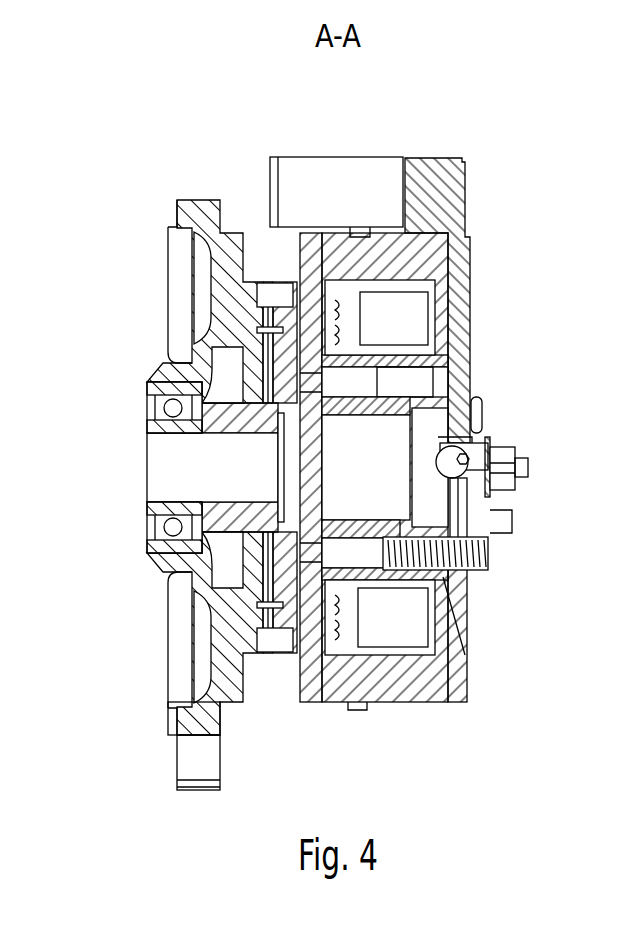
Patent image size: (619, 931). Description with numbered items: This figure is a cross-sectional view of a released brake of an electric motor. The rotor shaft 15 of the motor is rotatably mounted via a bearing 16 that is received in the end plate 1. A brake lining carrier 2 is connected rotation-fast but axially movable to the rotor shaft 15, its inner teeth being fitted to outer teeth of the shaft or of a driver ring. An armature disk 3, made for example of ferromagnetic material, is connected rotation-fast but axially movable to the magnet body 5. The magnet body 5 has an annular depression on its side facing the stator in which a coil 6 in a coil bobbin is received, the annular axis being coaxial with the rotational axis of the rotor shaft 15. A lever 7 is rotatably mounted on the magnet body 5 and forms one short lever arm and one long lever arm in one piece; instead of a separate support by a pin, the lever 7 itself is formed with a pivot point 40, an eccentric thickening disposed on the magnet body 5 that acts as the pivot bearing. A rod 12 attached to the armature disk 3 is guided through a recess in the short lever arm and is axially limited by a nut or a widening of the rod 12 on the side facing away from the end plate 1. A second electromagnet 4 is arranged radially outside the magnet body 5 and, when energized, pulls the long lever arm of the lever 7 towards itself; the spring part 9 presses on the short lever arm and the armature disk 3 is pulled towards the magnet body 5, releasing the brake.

The end plate 1 is at (203, 713).
The brake lining carrier 2 is at (265, 303).
The armature disk 3 is at (310, 250).
The second electromagnet 4 is at (373, 187).
The magnet body 5 is at (372, 260).
The coil 6 is at (407, 313).
The lever 7 is at (435, 197).
The spring part 9 is at (448, 552).
The rod 12 is at (523, 467).
The rotor shaft 15 is at (163, 460).
The bearing 16 is at (173, 408).
The pivot point 40 is at (477, 447).